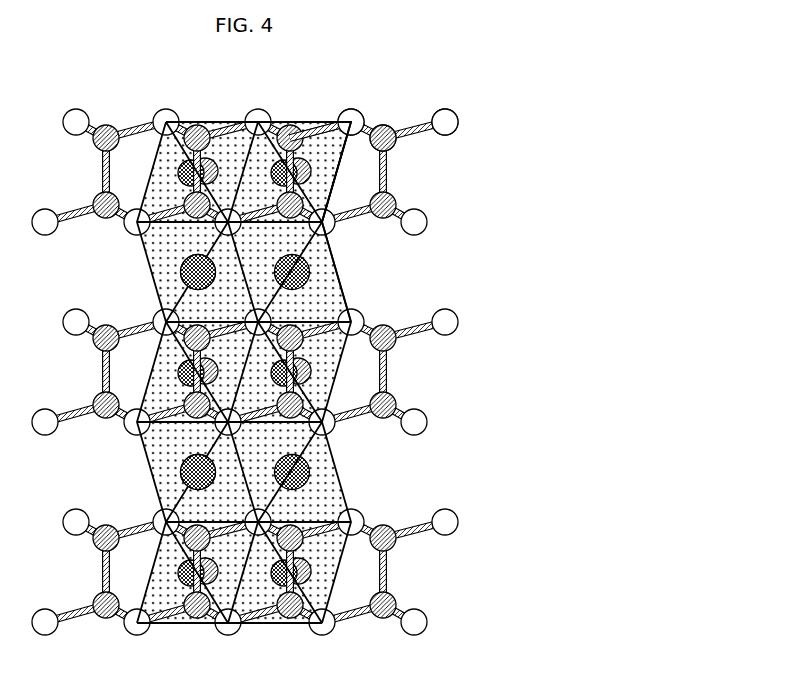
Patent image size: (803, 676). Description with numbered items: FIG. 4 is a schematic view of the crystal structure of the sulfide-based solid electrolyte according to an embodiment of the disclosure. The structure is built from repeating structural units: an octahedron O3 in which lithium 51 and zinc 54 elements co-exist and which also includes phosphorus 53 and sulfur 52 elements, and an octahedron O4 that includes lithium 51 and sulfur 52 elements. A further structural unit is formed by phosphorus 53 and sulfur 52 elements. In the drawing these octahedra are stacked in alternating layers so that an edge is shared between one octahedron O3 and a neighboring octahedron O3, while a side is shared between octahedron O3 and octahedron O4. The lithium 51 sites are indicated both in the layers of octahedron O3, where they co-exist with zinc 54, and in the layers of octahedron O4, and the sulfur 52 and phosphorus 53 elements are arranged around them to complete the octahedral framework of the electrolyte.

The lithium element 51 is at (272, 124).
The sulfur element 52 is at (443, 120).
The phosphorus element 53 is at (382, 132).
The zinc element 54 is at (322, 124).
The octahedron O3 is at (352, 168).
The octahedron O4 is at (352, 270).